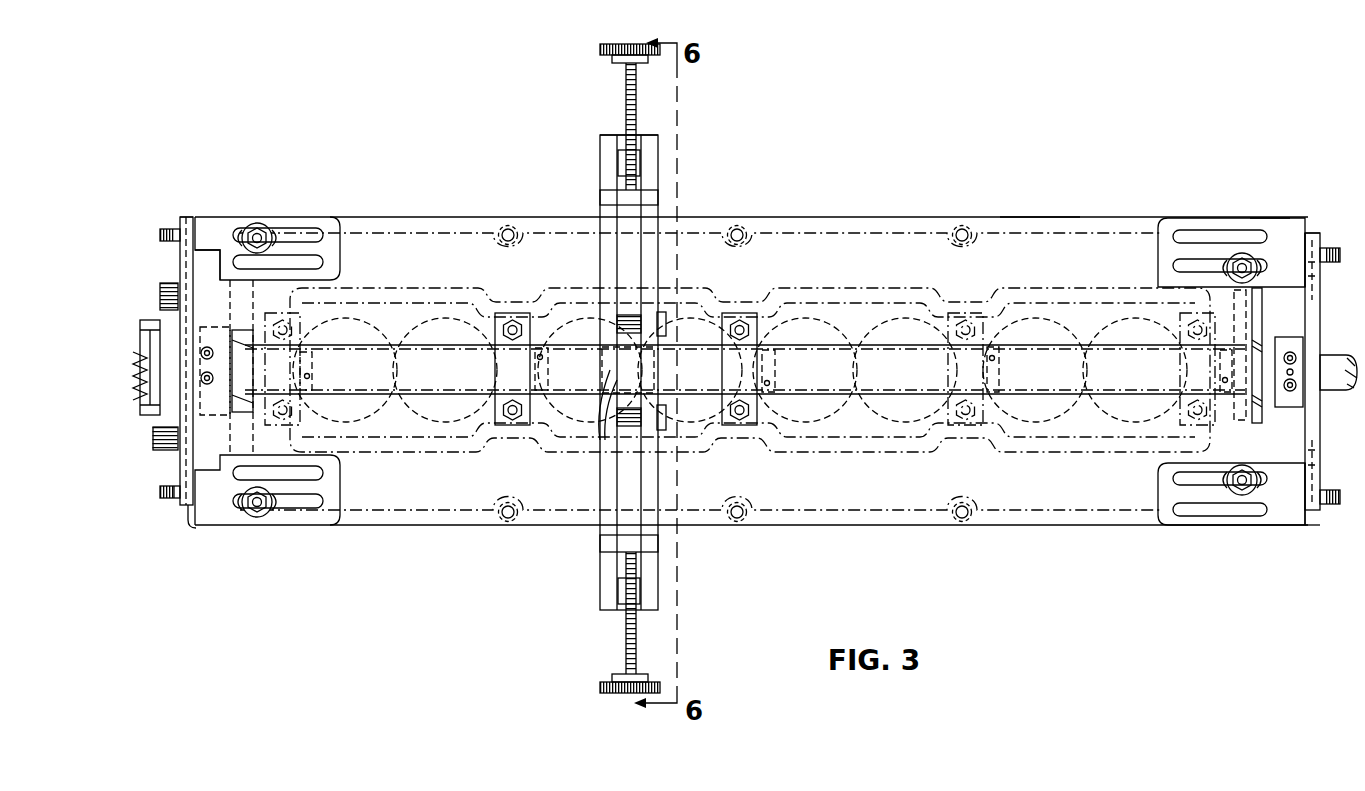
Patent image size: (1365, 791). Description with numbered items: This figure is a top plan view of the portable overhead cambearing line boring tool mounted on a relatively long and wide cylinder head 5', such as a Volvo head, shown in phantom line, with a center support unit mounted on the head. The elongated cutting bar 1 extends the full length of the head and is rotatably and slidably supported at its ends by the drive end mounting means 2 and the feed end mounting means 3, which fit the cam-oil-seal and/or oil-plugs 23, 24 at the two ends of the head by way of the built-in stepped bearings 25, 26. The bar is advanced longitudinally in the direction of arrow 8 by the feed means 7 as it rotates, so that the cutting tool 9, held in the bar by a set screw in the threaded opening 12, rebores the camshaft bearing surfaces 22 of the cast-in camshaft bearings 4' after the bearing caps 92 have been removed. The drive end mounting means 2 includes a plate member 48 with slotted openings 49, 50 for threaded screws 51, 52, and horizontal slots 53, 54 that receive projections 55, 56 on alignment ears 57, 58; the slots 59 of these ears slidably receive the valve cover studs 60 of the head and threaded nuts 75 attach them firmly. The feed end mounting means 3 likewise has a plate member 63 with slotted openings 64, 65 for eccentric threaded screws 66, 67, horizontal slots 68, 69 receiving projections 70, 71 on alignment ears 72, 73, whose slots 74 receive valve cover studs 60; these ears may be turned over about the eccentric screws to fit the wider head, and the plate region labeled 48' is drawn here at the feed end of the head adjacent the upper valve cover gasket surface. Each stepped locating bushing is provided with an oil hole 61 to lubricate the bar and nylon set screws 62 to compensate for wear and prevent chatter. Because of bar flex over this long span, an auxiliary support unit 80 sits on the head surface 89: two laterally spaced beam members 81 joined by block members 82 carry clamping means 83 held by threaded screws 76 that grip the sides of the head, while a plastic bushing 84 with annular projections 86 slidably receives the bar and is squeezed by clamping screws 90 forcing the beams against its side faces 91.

The cutting bar 1 is at (395, 343).
The drive end mounting means 2 is at (1322, 237).
The feed end mounting means 3 is at (187, 222).
The camshaft bearing 4' is at (1043, 371).
The cylinder head 5' is at (1046, 175).
The feed means 7 is at (147, 320).
The arrow 8 is at (1326, 408).
The cutting tool 9 is at (312, 374).
The threaded opening 12 is at (312, 372).
The camshaft bearing surfaces 22 is at (293, 348).
The cam-oil-seal and/or oil-plug 23 is at (1257, 329).
The cam-oil-seal and/or oil-plug 24 is at (255, 327).
The stepped bearing 25 is at (1267, 344).
The stepped bearing 26 is at (224, 327).
The plate member 48 is at (1334, 371).
The base plate 48' is at (751, 346).
The slotted opening 49 is at (1256, 480).
The slotted opening 50 is at (1313, 246).
The threaded screw 51 is at (1340, 500).
The threaded screw 52 is at (1342, 256).
The horizontal slot 53 is at (1306, 446).
The horizontal slot 54 is at (1318, 273).
The projection 55 is at (1308, 525).
The projection 56 is at (1307, 223).
The alignment ear 57 is at (1285, 527).
The alignment ear 58 is at (1270, 218).
The slots 59 is at (1178, 265).
The valve cover studs 60 is at (258, 236).
The oil hole 61 is at (207, 385).
The nylon set screws 62 is at (214, 353).
The plate member 63 is at (166, 490).
The slotted opening 64 is at (178, 462).
The slotted opening 65 is at (183, 272).
The threaded screw 66 is at (165, 499).
The threaded screw 67 is at (165, 228).
The horizontal slot 68 is at (195, 453).
The horizontal slot 69 is at (209, 258).
The projection 70 is at (187, 513).
The projection 71 is at (196, 222).
The alignment ear 72 is at (314, 525).
The alignment ear 73 is at (314, 227).
The slots 74 is at (323, 262).
The threaded nuts 75 is at (260, 234).
The threaded screws 76 is at (626, 98).
The auxiliary support unit 80 is at (600, 170).
The beam members 81 is at (654, 283).
The block member 82 is at (638, 154).
The clamping means 83 is at (658, 198).
The plastic bushing 84 is at (625, 350).
The annular projections 86 is at (582, 402).
The surface of the head 89 is at (697, 296).
The clamping screws 90 is at (664, 332).
The side faces 91 is at (608, 404).
The bearing caps 92 is at (518, 316).